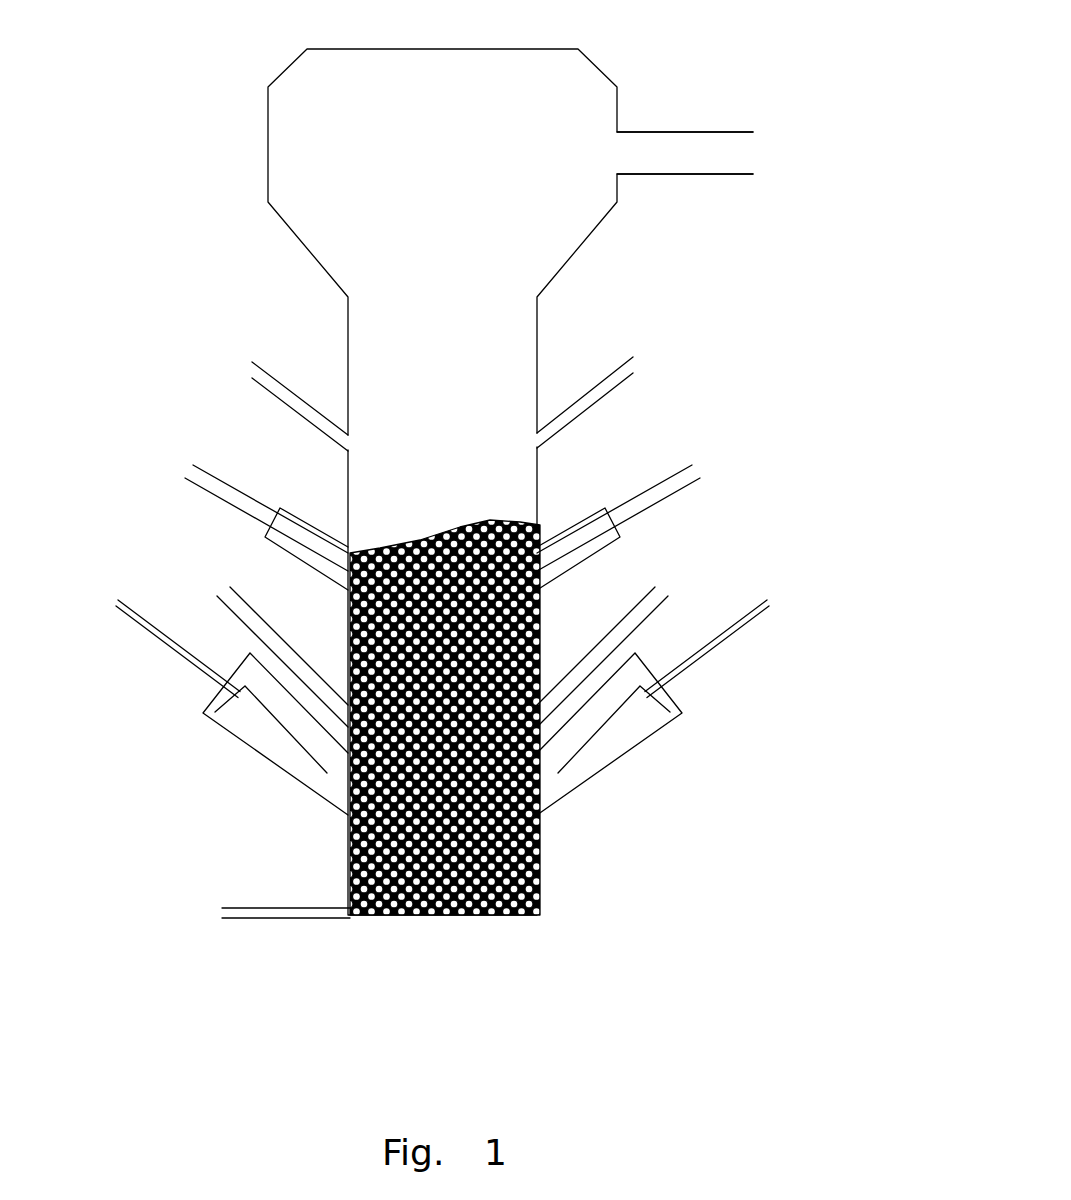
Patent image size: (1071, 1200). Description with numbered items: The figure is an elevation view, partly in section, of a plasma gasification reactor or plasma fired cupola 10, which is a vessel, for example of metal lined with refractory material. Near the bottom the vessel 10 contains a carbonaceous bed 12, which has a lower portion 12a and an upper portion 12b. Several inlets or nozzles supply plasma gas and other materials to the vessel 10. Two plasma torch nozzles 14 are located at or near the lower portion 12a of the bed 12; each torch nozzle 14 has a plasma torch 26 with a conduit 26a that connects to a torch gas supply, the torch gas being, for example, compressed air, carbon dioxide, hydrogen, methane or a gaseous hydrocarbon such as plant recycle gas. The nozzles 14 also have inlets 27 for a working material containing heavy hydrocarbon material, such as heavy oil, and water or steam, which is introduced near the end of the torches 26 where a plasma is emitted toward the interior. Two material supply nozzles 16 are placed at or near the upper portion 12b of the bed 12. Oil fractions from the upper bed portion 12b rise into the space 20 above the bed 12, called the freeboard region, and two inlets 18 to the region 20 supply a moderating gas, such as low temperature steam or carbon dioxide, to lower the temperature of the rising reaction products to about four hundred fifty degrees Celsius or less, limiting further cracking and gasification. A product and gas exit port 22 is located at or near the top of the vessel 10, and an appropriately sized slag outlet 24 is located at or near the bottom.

The plasma gasification reactor 10 is at (266, 161).
The carbonaceous bed 12 is at (470, 725).
The lower portion of the bed 12a is at (478, 881).
The upper portion of the bed 12b is at (478, 636).
The plasma torch nozzle 14 is at (257, 753).
The material supply nozzle 16 is at (248, 541).
The inlet 18 is at (278, 379).
The freeboard region 20 is at (470, 379).
The product and gas exit port 22 is at (674, 131).
The slag outlet 24 is at (286, 919).
The plasma torch 26 is at (240, 713).
The conduit 26a is at (154, 640).
The inlet 27 is at (216, 590).